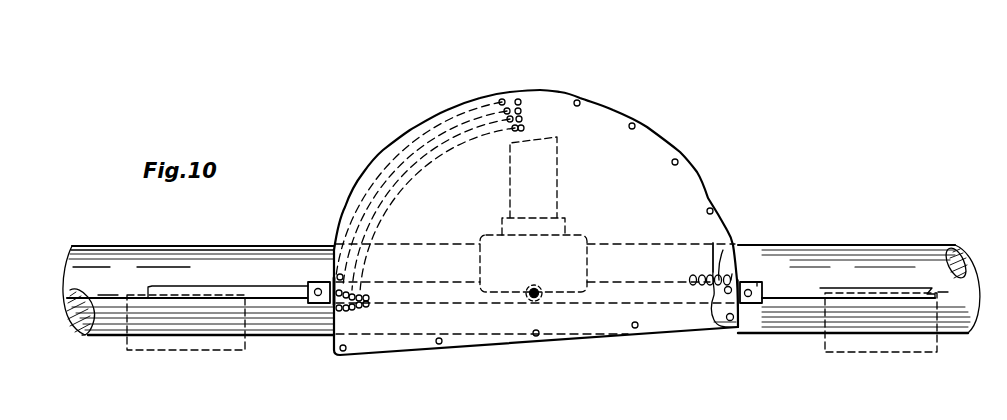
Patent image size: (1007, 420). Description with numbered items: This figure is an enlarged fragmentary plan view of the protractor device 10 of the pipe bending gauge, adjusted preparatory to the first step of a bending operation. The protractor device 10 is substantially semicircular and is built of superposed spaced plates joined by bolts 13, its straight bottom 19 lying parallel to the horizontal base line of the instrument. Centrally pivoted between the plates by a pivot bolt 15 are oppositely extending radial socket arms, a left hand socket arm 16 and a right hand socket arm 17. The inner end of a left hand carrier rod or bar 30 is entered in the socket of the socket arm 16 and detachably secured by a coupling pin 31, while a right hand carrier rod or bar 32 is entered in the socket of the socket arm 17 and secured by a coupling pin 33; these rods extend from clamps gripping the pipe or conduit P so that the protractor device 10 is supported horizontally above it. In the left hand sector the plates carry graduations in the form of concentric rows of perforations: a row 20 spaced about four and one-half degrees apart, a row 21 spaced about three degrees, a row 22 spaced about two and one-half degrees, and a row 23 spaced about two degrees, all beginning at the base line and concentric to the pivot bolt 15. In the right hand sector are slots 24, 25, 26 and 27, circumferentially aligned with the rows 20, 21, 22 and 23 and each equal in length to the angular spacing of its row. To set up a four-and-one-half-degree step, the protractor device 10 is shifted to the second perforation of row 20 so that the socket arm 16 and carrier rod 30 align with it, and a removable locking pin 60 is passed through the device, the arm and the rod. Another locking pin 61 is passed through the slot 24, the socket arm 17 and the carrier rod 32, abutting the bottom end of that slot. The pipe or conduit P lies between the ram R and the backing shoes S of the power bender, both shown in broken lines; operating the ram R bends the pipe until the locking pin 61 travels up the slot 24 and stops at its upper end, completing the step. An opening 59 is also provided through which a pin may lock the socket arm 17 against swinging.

The protractor device 10 is at (657, 133).
The bolts 13 is at (710, 207).
The pivot bolt 15 is at (536, 289).
The left hand socket arm 16 is at (312, 282).
The right hand socket arm 17 is at (757, 282).
The bottom 19 is at (506, 339).
The row of perforations 20 is at (519, 100).
The row of perforations 21 is at (521, 111).
The row of perforations 22 is at (522, 127).
The row of perforations 23 is at (514, 130).
The slot 24 is at (732, 274).
The slot 25 is at (723, 250).
The slot 26 is at (713, 243).
The slot 27 is at (710, 296).
The left hand carrier rod or bar 30 is at (270, 300).
The coupling pin 31 is at (318, 305).
The right hand carrier rod or bar 32 is at (818, 292).
The coupling pin 33 is at (759, 330).
The opening 59 is at (693, 277).
The removable locking pin 60 is at (333, 288).
The locking pin 61 is at (715, 326).
The pipe or conduit P is at (210, 258).
The ram R is at (578, 236).
The backing shoes S is at (125, 347).